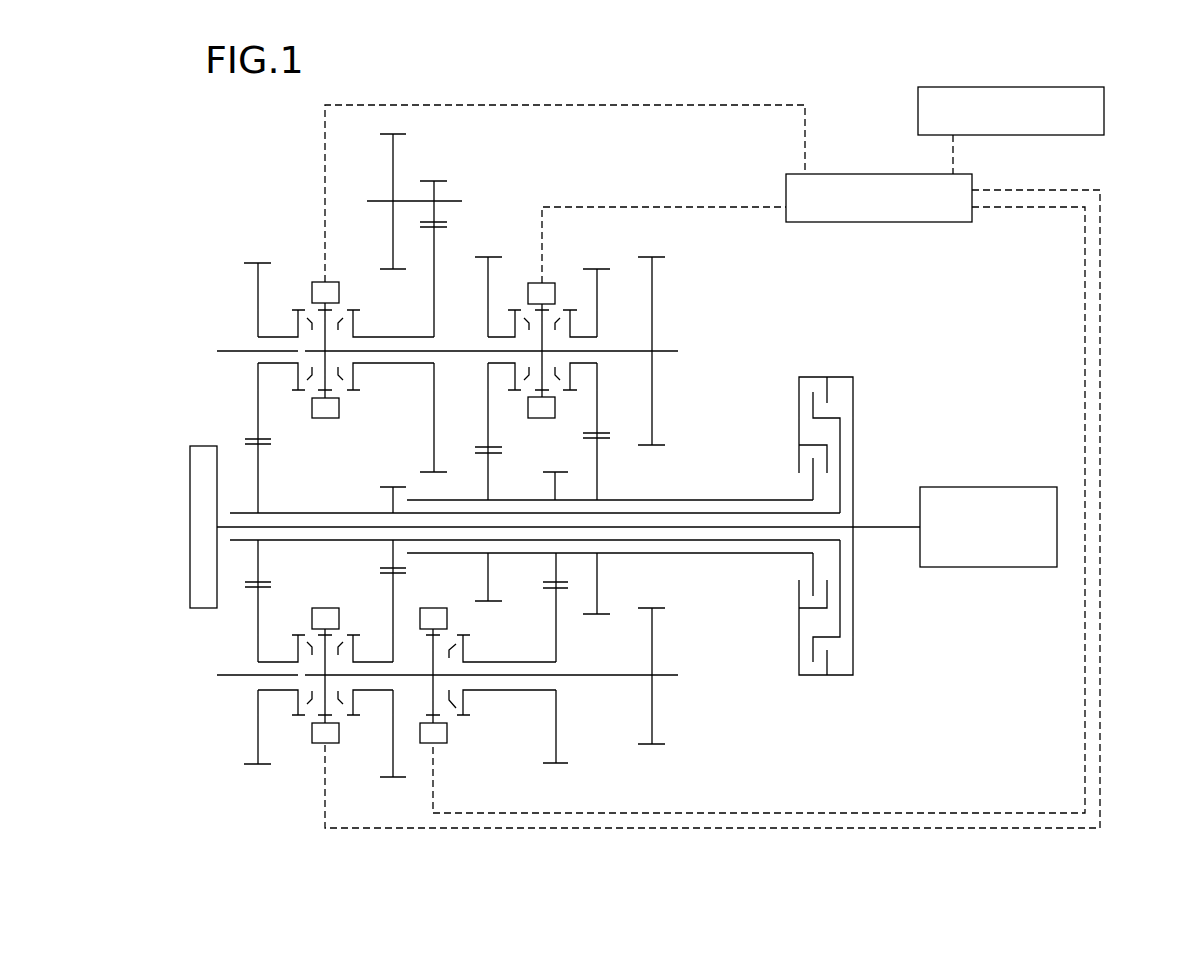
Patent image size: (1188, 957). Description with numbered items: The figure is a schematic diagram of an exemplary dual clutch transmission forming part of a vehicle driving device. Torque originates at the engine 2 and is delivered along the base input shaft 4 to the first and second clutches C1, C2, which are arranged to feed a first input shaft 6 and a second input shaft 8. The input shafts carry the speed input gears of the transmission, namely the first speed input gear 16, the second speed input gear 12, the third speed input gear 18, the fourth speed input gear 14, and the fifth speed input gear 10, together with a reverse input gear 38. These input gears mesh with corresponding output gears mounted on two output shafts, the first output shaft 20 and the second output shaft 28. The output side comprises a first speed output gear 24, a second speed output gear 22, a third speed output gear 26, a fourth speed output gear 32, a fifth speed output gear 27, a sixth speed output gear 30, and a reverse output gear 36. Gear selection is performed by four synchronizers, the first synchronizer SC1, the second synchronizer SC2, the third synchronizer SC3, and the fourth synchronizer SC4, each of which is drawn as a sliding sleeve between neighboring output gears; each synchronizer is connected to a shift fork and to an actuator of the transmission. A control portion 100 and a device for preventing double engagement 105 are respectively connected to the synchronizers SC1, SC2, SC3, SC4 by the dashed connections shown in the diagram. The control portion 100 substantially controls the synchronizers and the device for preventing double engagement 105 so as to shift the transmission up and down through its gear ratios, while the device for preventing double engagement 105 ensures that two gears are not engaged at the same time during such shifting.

The engine 2 is at (1022, 487).
The base input shaft 4 is at (296, 527).
The first input shaft 6 is at (347, 540).
The second input shaft 8 is at (522, 557).
The fifth speed input gear 10 is at (600, 580).
The second speed input gear 12 is at (555, 487).
The fourth speed input gear 14 is at (487, 580).
The first speed input gear 16 is at (393, 497).
The third speed input gear 18 is at (258, 466).
The first output shaft 20 is at (603, 678).
The second speed output gear 22 is at (556, 729).
The first speed output gear 24 is at (393, 759).
The third speed output gear 26 is at (258, 732).
The fifth speed output gear 27 is at (258, 282).
The second output shaft 28 is at (678, 347).
The sixth speed output gear 30 is at (597, 280).
The fourth speed output gear 32 is at (488, 278).
The reverse output gear 36 is at (434, 245).
The reverse input gear 38 is at (393, 148).
The first synchronizer SC1 is at (305, 760).
The second synchronizer SC2 is at (462, 755).
The third synchronizer SC3 is at (556, 272).
The fourth synchronizer SC4 is at (307, 265).
The first clutch C1 is at (840, 395).
The second clutch C2 is at (790, 458).
The control portion 100 is at (1104, 112).
The device for preventing double engagement 105 is at (946, 222).